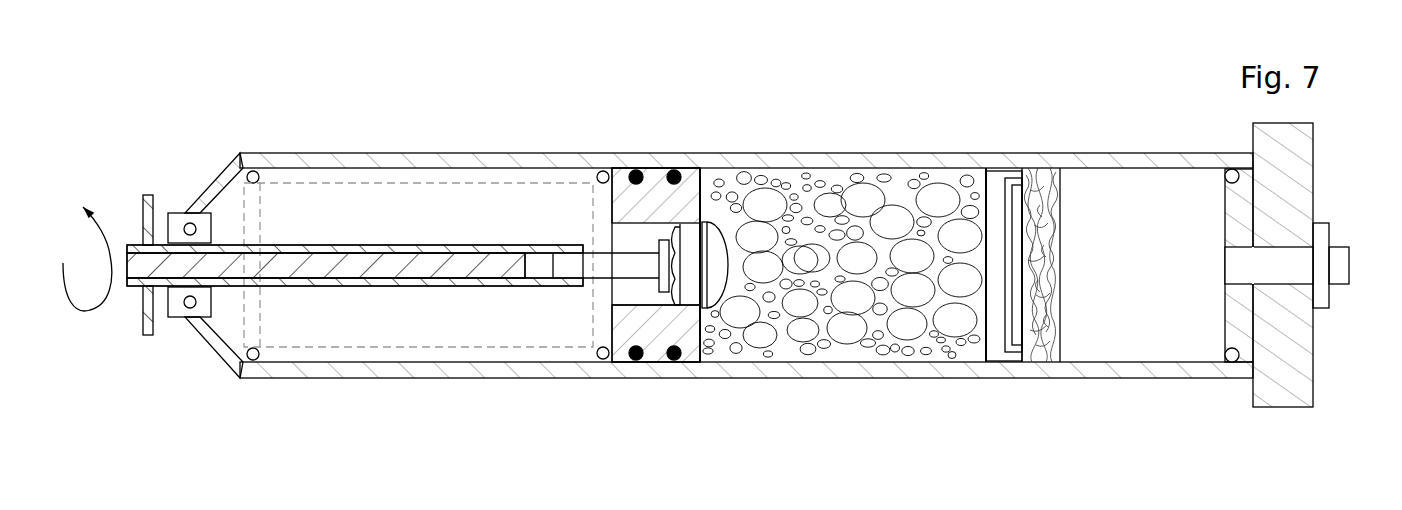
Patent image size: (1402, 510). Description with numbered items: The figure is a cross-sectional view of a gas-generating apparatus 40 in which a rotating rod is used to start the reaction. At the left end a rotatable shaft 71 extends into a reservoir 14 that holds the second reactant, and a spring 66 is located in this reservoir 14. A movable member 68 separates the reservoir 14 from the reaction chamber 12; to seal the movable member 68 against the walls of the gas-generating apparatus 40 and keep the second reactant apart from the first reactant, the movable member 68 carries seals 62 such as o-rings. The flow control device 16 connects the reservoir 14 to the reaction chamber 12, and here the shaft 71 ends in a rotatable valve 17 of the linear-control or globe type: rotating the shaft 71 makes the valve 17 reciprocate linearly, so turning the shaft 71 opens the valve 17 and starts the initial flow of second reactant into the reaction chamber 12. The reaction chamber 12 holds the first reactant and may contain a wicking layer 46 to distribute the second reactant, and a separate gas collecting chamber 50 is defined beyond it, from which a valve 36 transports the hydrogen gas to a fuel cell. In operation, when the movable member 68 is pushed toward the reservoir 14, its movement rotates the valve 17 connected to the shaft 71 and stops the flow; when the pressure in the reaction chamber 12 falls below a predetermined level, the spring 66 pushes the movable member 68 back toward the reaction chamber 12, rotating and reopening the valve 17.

The gas-generating apparatus 40 is at (205, 122).
The shaft 71 is at (290, 262).
The reservoir 14 is at (477, 215).
The spring 66 is at (533, 173).
The movable member 68 is at (657, 180).
The seals 62 is at (637, 360).
The self-regulated flow control device 16 is at (720, 220).
The valve 17 is at (720, 275).
The reaction chamber 12 is at (833, 198).
The wicking layer 46 is at (1032, 173).
The gas collecting chamber 50 is at (1157, 182).
The valve 36 is at (1340, 262).